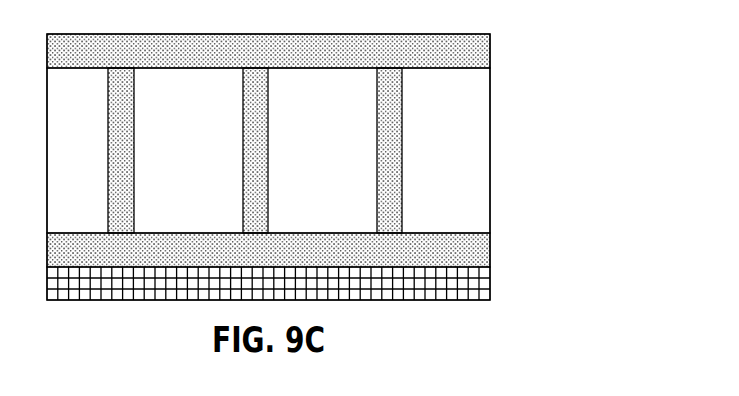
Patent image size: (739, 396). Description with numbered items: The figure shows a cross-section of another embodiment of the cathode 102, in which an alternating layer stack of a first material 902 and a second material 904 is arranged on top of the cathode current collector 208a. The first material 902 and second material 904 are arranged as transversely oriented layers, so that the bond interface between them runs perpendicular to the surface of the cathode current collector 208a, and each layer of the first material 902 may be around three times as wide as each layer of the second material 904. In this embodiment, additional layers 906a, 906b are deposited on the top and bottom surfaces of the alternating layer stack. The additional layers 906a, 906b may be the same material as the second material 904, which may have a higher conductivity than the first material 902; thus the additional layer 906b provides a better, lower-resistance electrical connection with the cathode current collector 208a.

The cathode 102 is at (80, 14).
The first material 902 is at (491, 165).
The second material 904 is at (403, 143).
The additional layer 906a is at (491, 53).
The additional layer 906b is at (491, 236).
The cathode current collector 208a is at (491, 290).